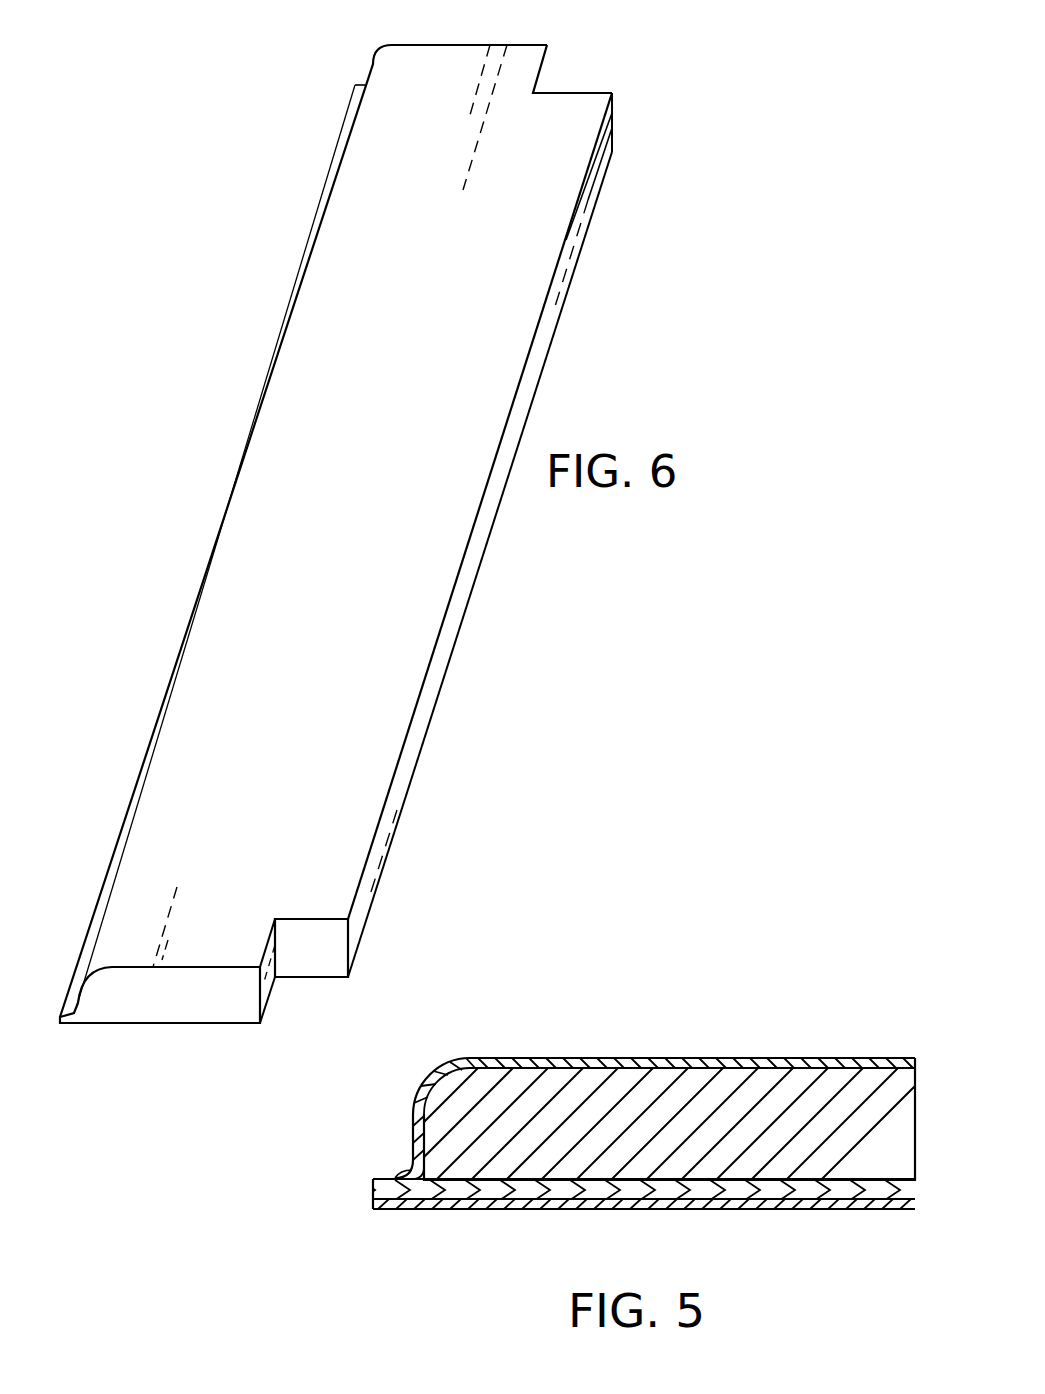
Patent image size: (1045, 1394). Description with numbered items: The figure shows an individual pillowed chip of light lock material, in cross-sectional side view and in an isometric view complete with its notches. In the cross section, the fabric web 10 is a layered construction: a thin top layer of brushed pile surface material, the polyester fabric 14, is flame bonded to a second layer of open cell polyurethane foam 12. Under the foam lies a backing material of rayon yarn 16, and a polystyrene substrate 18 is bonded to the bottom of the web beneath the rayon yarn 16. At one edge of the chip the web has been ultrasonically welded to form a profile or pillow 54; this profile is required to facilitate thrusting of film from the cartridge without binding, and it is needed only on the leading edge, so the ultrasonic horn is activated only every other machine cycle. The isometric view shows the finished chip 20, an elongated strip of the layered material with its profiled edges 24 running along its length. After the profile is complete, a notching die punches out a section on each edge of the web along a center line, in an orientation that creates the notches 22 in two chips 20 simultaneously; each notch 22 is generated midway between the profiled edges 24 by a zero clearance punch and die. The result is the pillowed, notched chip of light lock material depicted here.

In FIG. 5, the fabric web 10 is at (587, 1032).
In FIG. 5, the open cell polyurethane foam 12 is at (785, 1085).
In FIG. 5, the polyester fabric 14 is at (688, 1064).
In FIG. 5, the rayon yarn 16 is at (512, 1190).
In FIG. 5, the polystyrene substrate 18 is at (602, 1203).
In FIG. 5, the pillow 54 is at (395, 1178).
In FIG. 6, the chip 20 is at (208, 157).
In FIG. 6, the notch 22 is at (588, 74).
In FIG. 6, the profiled edge 24 is at (177, 665).